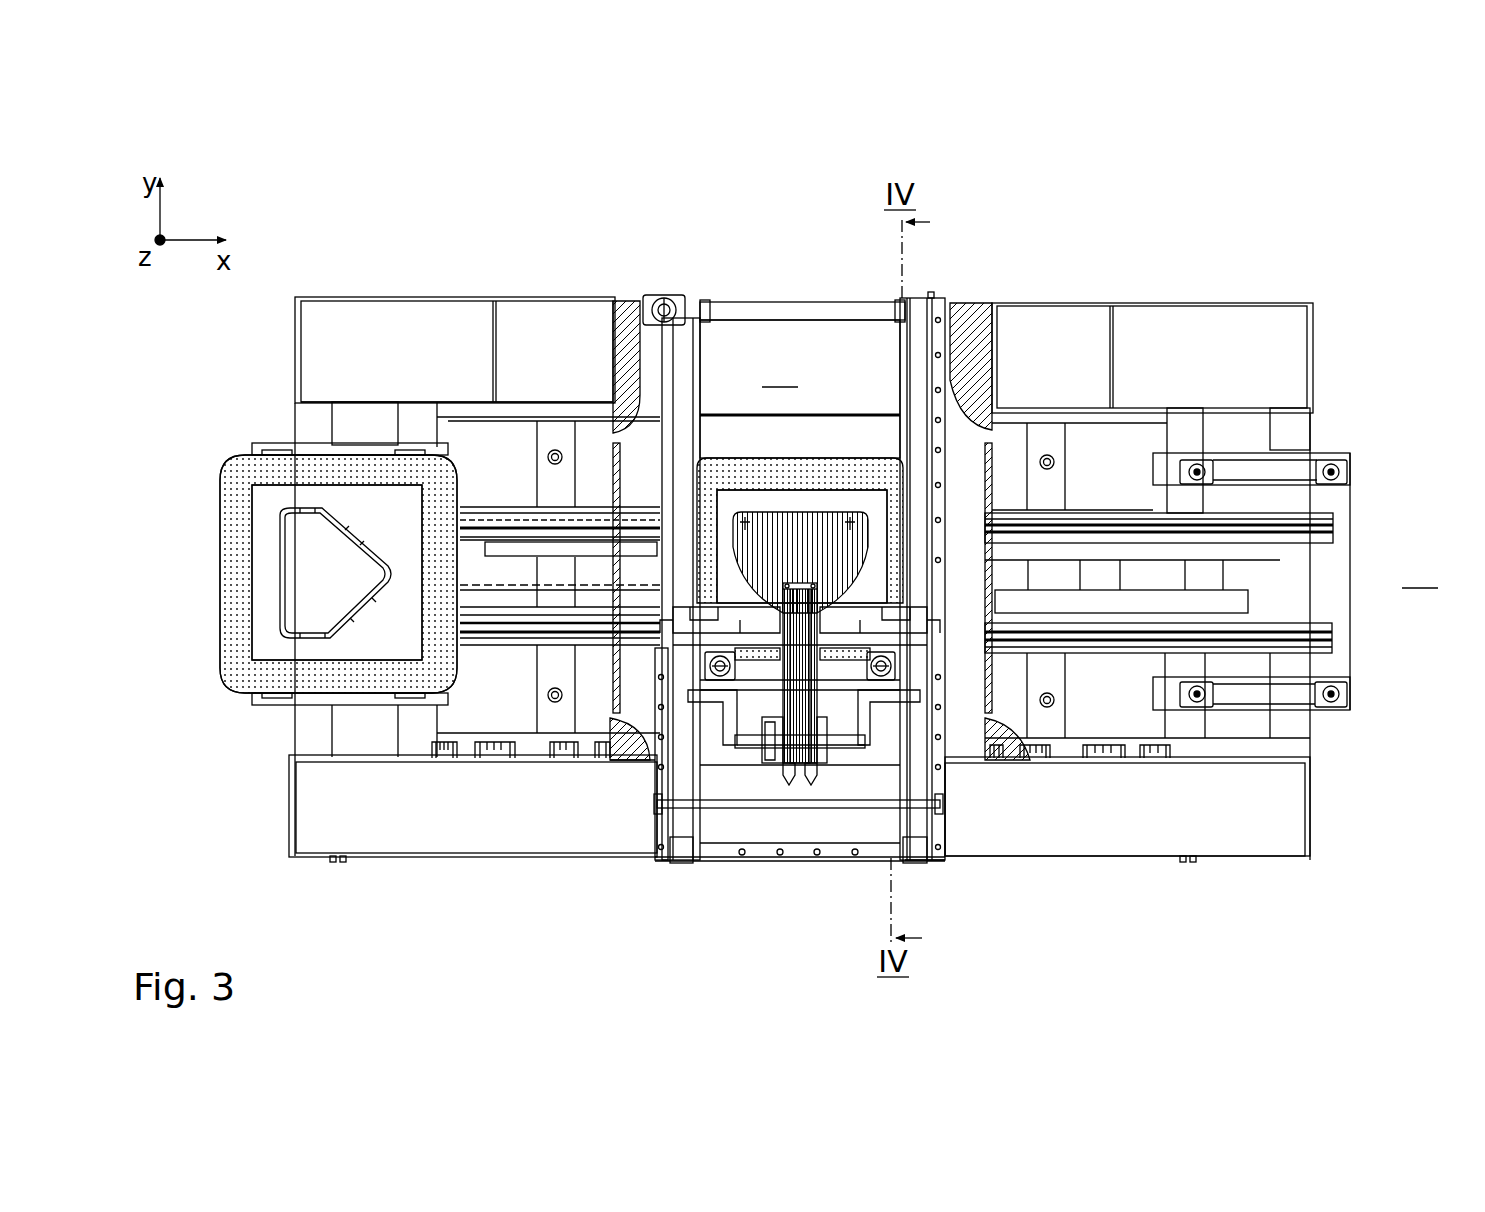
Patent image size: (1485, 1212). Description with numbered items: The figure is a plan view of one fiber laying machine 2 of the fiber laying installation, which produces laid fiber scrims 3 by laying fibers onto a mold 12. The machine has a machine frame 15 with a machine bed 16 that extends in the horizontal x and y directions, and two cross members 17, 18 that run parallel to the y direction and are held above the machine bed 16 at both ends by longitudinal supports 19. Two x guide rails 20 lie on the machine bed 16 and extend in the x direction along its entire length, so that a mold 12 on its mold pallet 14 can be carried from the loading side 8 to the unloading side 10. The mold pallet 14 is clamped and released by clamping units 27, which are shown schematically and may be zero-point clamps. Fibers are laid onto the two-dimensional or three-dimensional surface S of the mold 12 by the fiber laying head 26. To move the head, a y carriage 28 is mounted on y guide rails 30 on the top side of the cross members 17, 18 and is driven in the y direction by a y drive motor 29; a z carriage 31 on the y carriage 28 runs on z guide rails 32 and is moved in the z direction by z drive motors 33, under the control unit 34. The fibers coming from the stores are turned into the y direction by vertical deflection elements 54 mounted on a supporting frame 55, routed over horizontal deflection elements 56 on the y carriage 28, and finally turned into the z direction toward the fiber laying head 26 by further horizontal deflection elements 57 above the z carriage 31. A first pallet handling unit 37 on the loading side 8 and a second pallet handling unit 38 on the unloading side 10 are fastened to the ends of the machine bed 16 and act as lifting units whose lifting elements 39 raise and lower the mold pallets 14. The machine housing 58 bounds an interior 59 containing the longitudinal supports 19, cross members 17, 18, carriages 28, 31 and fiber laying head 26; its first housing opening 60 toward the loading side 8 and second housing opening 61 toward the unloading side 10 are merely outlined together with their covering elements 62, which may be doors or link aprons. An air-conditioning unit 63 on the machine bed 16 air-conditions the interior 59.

The fiber laying machine 2 is at (866, 226).
The laid fiber scrim 3 is at (500, 400).
The loading side 8 is at (155, 603).
The unloading side 10 is at (1217, 583).
The mold 12 is at (258, 630).
The mold pallet 14 is at (245, 675).
The machine frame 15 is at (912, 866).
The machine bed 16 is at (298, 425).
The cross member 17 is at (700, 812).
The cross member 18 is at (925, 860).
The longitudinal support 19 is at (685, 382).
The x guide rail 20 is at (1322, 530).
The fiber laying head 26 is at (813, 778).
The clamping unit 27 is at (745, 530).
The y carriage 28 is at (960, 730).
The y drive motor 29 is at (655, 300).
The y guide rail 30 is at (612, 430).
The z carriage 31 is at (850, 748).
The z guide rail 32 is at (660, 690).
The z drive motor 33 is at (548, 752).
The control unit 34 is at (360, 315).
The first pallet handling unit 37 is at (230, 455).
The second pallet handling unit 38 is at (1322, 433).
The lifting element 39 is at (1300, 455).
The deflection element 54 is at (770, 750).
The supporting frame 55 is at (622, 745).
The deflection element 56 is at (800, 600).
The deflection element 57 is at (760, 770).
The machine housing 58 is at (985, 435).
The interior 59 is at (800, 389).
The first housing opening 60 is at (700, 652).
The second housing opening 61 is at (1090, 408).
The covering element 62 is at (700, 650).
The air-conditioning unit 63 is at (1240, 315).
The surface S is at (280, 558).